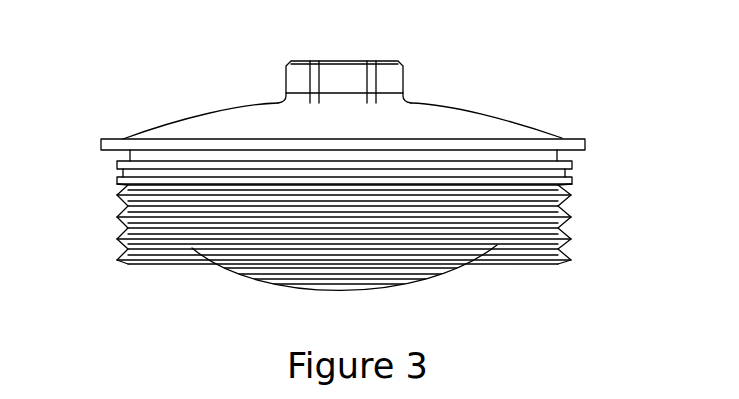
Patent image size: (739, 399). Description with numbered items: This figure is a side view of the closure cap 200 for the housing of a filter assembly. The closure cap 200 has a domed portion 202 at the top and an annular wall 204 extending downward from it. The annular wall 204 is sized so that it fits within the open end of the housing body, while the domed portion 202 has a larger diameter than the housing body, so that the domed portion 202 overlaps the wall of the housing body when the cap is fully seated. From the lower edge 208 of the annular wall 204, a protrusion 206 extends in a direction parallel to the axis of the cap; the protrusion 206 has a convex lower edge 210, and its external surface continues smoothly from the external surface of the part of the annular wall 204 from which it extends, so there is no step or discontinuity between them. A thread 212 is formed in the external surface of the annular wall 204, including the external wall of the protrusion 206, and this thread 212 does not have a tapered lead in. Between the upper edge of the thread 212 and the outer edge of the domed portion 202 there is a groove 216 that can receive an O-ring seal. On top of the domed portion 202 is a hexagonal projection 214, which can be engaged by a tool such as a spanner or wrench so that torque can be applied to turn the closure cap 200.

The closure cap 200 is at (550, 88).
The domed portion 202 is at (220, 120).
The annular wall 204 is at (150, 202).
The protrusion 206 is at (400, 272).
The lower edge 208 is at (534, 247).
The convex lower edge 210 is at (268, 282).
The thread 212 is at (571, 212).
The hexagonal projection 214 is at (350, 60).
The groove 216 is at (582, 157).